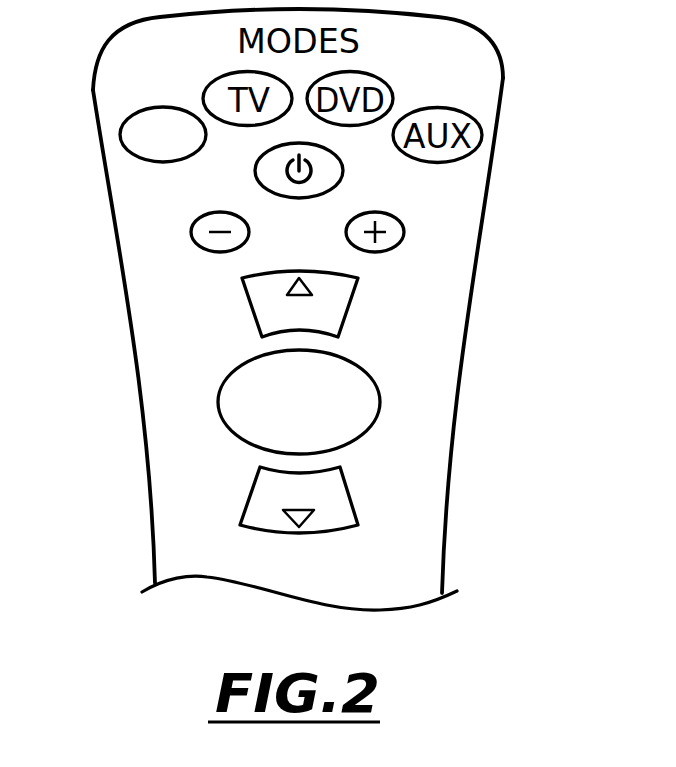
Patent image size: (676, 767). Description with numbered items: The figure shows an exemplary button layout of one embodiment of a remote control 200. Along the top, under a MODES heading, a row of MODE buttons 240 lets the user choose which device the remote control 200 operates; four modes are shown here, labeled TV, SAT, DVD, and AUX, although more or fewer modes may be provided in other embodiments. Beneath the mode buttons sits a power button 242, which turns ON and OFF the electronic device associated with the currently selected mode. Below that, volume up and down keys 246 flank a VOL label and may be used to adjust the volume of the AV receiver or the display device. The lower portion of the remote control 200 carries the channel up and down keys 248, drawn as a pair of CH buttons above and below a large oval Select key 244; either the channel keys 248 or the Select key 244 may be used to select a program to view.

The remote control 200 is at (497, 55).
The MODE buttons 240 is at (121, 142).
The power button 242 is at (330, 172).
The Select key 244 is at (372, 404).
The volume up and down keys 246 is at (404, 232).
The channel up and down keys 248 is at (350, 307).